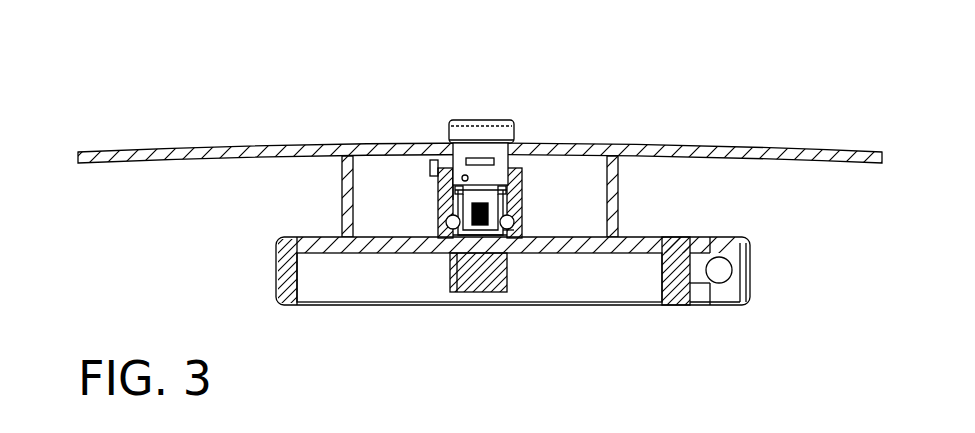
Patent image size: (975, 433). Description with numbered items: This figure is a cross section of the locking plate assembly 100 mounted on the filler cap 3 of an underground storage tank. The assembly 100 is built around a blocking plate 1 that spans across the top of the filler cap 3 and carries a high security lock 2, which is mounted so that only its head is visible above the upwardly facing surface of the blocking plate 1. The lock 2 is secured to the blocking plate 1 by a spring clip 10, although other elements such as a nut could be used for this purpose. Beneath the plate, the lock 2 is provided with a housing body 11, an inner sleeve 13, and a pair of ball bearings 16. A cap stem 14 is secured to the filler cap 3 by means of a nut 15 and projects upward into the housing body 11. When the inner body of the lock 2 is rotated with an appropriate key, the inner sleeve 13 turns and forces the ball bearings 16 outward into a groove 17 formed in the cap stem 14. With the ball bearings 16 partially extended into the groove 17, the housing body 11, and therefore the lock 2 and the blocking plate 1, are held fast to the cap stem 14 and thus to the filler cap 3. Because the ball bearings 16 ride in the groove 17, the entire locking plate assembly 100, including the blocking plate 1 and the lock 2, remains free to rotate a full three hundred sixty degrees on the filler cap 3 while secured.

The locking plate assembly 100 is at (191, 96).
The blocking plate 1 is at (782, 147).
The high security lock 2 is at (518, 118).
The filler cap 3 is at (270, 258).
The spring clip 10 is at (432, 163).
The housing body 11 is at (429, 189).
The inner sleeve 13 is at (455, 232).
The cap stem 14 is at (482, 240).
The nut 15 is at (503, 243).
The ball bearings 16 is at (510, 236).
The groove 17 is at (514, 229).